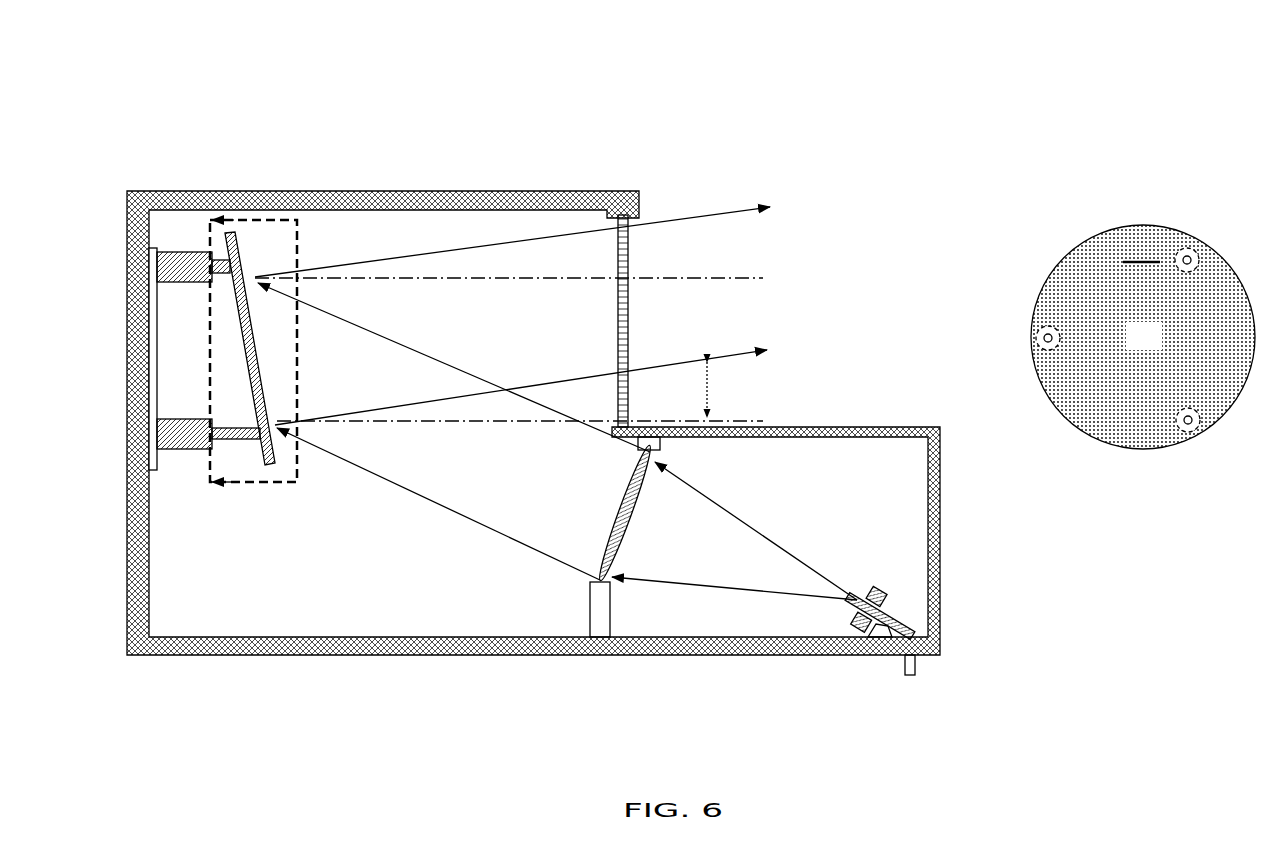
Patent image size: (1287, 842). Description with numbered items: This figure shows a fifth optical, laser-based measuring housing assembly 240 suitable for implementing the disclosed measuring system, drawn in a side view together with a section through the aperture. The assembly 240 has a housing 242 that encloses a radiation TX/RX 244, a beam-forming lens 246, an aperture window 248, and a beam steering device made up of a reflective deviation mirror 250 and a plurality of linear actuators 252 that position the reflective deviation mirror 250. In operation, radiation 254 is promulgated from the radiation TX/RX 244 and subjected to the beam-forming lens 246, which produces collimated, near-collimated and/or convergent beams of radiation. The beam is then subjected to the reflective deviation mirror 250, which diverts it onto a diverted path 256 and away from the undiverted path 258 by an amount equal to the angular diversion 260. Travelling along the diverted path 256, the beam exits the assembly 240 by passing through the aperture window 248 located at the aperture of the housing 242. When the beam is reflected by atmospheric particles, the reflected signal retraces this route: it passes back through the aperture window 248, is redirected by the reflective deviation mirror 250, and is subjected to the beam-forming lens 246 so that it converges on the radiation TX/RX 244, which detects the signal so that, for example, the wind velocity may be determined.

The housing assembly 240 is at (213, 105).
The housing 242 is at (320, 191).
The radiation TX/RX 244 is at (910, 612).
The beam-forming lens 246 is at (615, 512).
The aperture window 248 is at (633, 255).
The reflective deviation mirror 250 is at (270, 470).
The linear actuators 252 is at (1170, 238).
The radiation 254 is at (797, 553).
The diverted path 256 is at (715, 207).
The undiverted path 258 is at (432, 423).
The angular diversion 260 is at (780, 389).